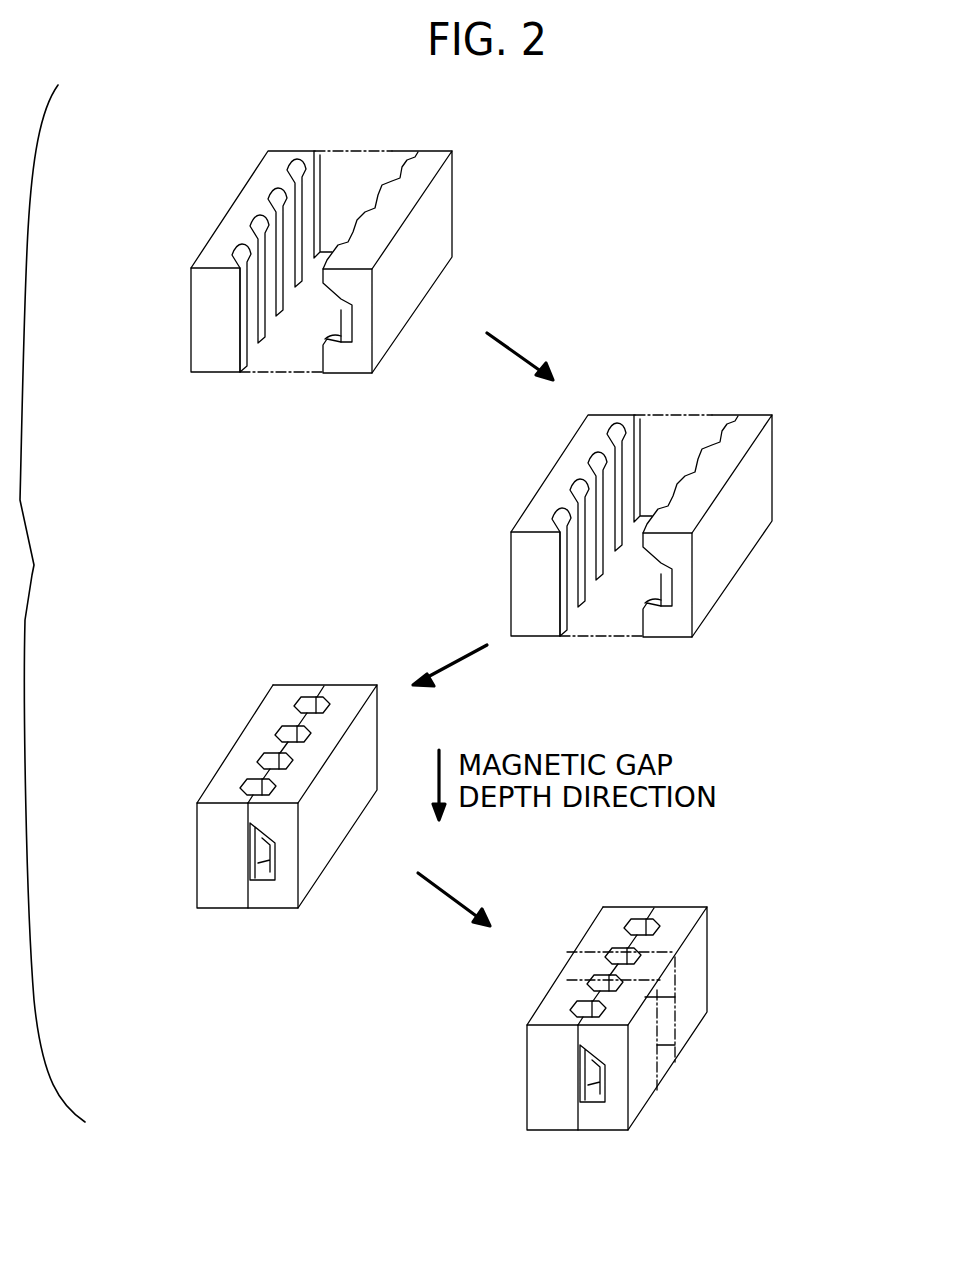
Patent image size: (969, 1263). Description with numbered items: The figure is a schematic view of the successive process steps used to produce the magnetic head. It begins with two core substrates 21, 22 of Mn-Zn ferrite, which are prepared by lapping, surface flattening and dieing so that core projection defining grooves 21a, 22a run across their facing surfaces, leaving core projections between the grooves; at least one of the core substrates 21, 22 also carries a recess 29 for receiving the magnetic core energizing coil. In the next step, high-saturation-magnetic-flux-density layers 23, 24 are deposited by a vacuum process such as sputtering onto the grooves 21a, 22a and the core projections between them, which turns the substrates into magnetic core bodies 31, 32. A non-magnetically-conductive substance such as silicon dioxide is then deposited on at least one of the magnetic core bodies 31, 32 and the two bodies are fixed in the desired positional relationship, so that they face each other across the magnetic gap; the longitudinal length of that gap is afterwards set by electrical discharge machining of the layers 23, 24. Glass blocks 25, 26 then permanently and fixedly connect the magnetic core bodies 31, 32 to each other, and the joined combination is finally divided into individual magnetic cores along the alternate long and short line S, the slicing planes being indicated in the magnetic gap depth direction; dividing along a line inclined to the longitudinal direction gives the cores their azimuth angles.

The core substrate 21 is at (397, 305).
The core projection defining groove 21a is at (395, 196).
The core substrate 22 is at (203, 328).
The core projection defining groove 22a is at (276, 196).
The high-saturation-magnetic-flux-density layer 23 is at (712, 413).
The high-saturation-magnetic-flux-density layer 24 is at (645, 413).
The glass block 25 is at (645, 997).
The glass block 26 is at (612, 944).
The recess 29 is at (340, 362).
The magnetic core body 31 is at (772, 465).
The magnetic core body 32 is at (558, 451).
The alternate long and short line S is at (660, 1045).